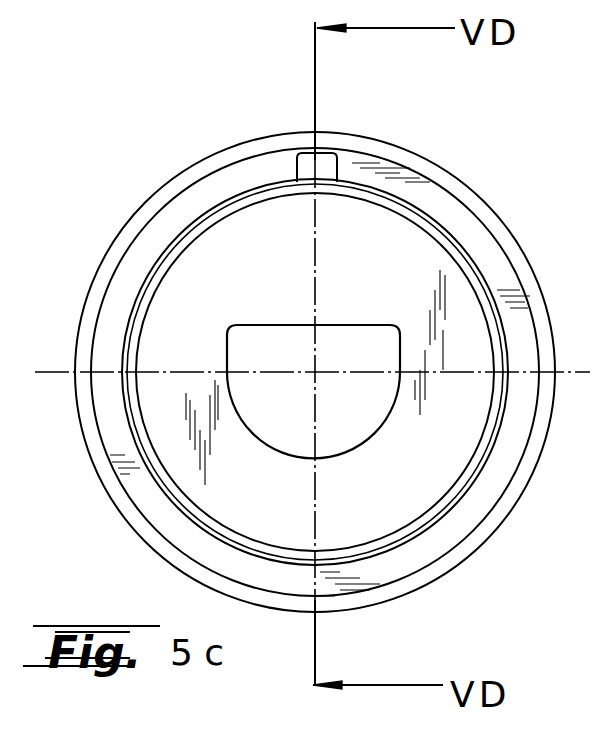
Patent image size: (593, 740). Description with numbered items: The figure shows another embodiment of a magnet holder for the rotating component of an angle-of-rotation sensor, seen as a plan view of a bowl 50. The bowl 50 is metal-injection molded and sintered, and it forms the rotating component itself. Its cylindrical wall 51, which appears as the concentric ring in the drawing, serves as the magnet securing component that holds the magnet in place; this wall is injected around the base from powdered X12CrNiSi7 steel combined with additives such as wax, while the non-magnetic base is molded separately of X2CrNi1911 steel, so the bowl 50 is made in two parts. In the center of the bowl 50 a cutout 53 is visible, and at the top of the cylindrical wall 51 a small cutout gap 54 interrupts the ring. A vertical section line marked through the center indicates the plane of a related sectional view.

The bowl 50 is at (488, 190).
The cylindrical wall 51 is at (171, 214).
The cutout 53 is at (313, 391).
The cutout gap 54 is at (327, 164).